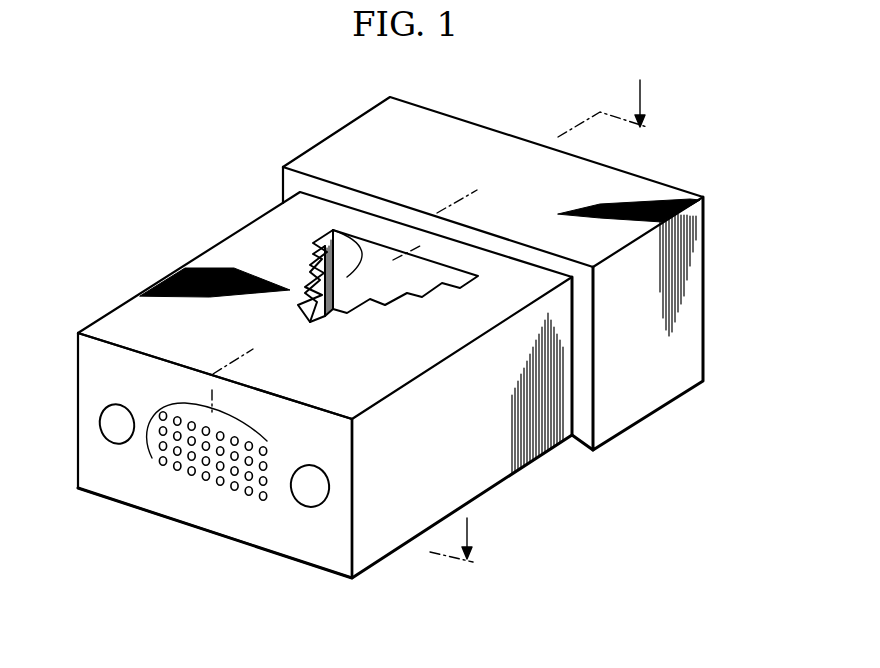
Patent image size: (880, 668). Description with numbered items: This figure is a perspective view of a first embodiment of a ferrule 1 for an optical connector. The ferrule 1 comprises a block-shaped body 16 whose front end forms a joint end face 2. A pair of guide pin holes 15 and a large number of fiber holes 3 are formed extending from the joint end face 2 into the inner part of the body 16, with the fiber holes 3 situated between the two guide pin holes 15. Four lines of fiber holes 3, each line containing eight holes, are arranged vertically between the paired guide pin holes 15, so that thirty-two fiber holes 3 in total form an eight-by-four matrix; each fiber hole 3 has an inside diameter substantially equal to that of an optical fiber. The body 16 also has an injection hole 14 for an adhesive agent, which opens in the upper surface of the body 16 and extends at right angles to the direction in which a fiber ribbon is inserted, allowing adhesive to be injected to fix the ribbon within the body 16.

The ferrule 1 is at (226, 135).
The joint end face 2 is at (90, 389).
The fiber holes 3 is at (190, 458).
The injection hole 14 is at (333, 230).
The guide pin holes 15 is at (117, 429).
The body 16 is at (118, 302).